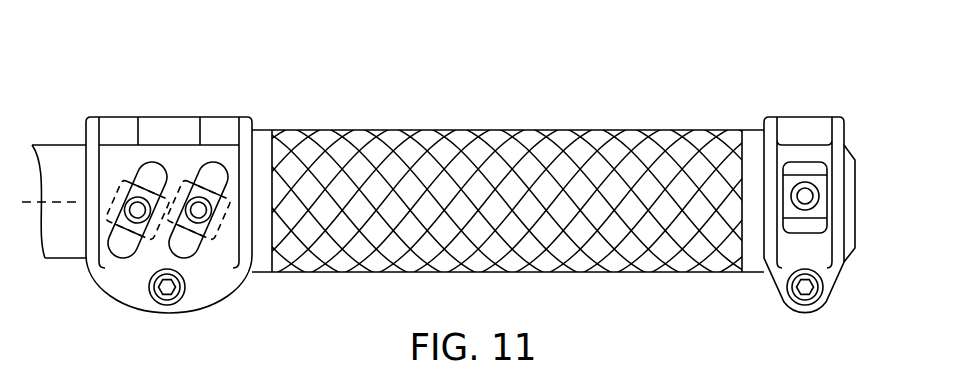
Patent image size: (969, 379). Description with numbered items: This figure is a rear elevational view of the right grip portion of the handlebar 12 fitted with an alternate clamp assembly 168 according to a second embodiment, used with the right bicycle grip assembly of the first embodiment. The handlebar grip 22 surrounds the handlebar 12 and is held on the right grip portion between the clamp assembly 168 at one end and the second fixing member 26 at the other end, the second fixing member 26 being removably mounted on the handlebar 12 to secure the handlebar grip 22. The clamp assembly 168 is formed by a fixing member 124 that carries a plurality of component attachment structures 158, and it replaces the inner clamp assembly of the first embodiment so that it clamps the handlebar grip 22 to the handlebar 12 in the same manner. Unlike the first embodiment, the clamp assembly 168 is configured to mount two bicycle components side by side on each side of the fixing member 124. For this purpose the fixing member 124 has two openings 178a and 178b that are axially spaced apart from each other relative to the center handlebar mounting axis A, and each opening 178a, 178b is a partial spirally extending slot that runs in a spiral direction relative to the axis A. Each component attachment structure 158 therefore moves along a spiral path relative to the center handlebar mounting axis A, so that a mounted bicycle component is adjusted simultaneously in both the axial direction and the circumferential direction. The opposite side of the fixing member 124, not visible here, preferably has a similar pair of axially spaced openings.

The handlebar 12 is at (58, 143).
The handlebar grip 22 is at (523, 127).
The second fixing member 26 is at (813, 115).
The fixing member 124 is at (218, 114).
The component attachment structures 158 is at (171, 196).
The clamp assembly 168 is at (250, 51).
The opening 178a is at (128, 257).
The opening 178b is at (200, 257).
The center handlebar mounting axis A is at (68, 203).